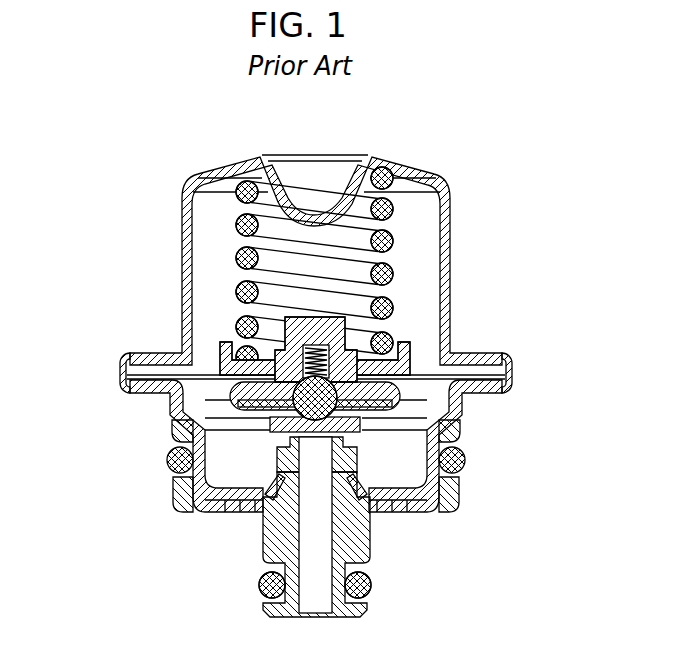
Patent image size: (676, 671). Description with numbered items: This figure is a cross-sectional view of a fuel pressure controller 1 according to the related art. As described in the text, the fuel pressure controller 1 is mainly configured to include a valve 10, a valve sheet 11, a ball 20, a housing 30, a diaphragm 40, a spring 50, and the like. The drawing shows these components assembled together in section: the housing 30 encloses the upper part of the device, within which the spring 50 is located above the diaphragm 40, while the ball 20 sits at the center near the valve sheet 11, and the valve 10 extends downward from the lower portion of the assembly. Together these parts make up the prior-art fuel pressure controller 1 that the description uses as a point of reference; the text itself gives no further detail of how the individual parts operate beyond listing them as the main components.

The fuel pressure controller 1 is at (500, 244).
The valve 10 is at (262, 540).
The valve sheet 11 is at (327, 417).
The ball 20 is at (337, 398).
The housing 30 is at (182, 330).
The diaphragm 40 is at (200, 377).
The spring 50 is at (393, 311).